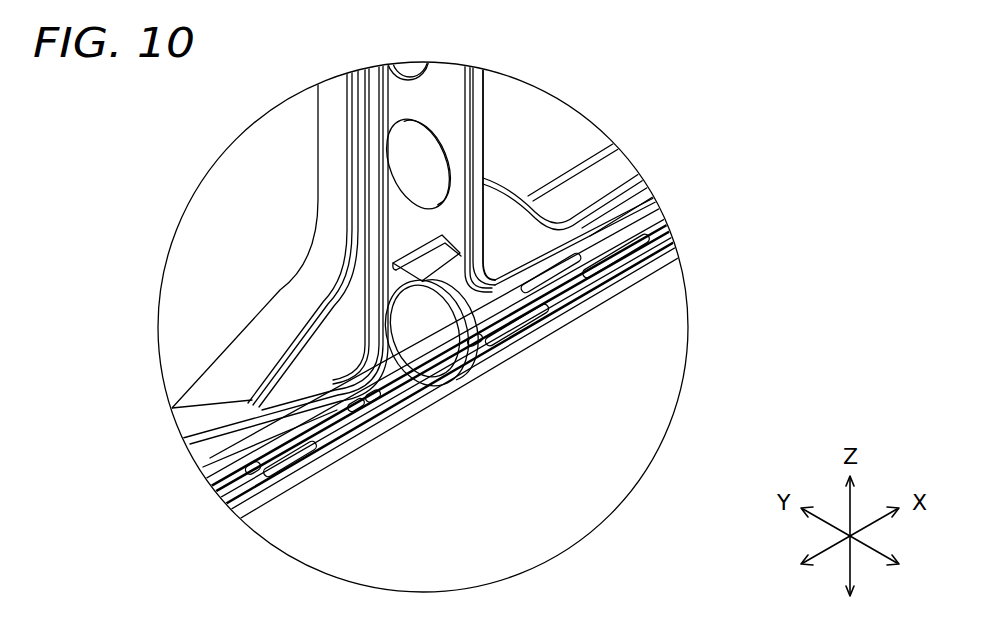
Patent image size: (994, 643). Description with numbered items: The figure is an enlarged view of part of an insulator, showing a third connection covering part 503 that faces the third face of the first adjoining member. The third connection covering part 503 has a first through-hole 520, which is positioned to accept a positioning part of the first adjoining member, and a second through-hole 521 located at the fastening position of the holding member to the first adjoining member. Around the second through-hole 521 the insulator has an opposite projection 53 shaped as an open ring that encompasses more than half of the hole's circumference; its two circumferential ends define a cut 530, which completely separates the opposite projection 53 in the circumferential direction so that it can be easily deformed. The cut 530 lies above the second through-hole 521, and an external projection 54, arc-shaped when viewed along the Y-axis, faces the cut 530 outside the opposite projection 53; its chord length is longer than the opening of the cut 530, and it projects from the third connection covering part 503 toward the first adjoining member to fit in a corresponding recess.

The opposite projection 53 is at (393, 313).
The cut 530 is at (418, 285).
The external projection 54 is at (427, 252).
The third connection covering part 503 is at (452, 120).
The first through-hole 520 is at (443, 175).
The second through-hole 521 is at (447, 367).